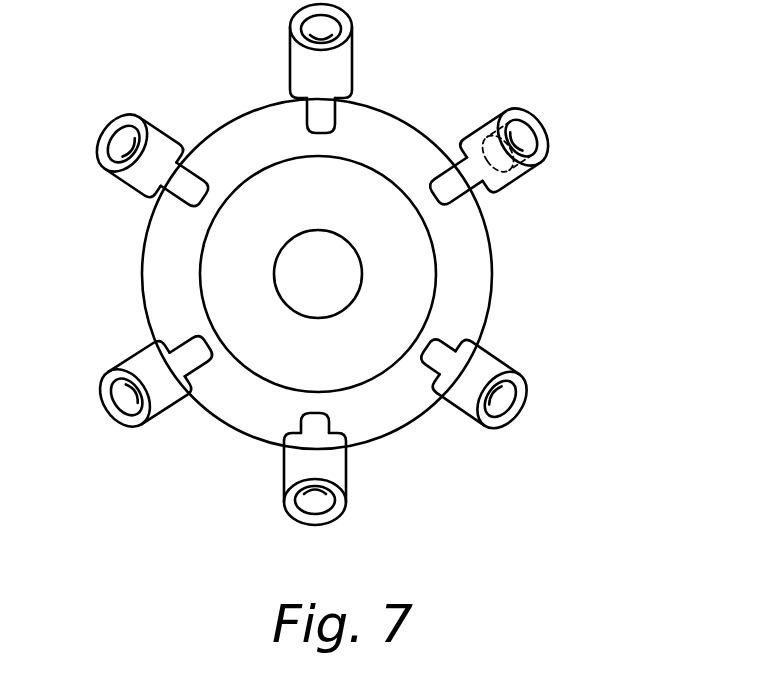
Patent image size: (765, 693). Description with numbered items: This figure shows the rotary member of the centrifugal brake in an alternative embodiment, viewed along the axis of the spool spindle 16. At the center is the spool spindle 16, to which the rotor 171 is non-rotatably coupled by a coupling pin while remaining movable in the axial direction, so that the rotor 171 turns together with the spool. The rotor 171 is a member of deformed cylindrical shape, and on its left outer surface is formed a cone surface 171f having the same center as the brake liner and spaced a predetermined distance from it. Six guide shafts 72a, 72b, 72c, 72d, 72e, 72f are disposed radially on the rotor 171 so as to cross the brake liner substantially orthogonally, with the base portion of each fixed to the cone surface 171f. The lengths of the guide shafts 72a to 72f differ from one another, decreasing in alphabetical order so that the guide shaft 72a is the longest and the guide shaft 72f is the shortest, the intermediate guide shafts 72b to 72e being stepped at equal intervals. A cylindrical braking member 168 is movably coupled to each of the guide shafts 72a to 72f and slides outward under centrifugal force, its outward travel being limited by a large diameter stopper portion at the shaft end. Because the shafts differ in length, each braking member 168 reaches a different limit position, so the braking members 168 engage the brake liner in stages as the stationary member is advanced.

The spool spindle 16 is at (302, 265).
The guide shaft 72a is at (441, 167).
The guide shaft 72b is at (331, 123).
The guide shaft 72c is at (205, 183).
The guide shaft 72d is at (185, 346).
The guide shaft 72e is at (326, 430).
The guide shaft 72f is at (447, 345).
The braking member 168 is at (352, 53).
The rotor 171 is at (511, 262).
The cone surface 171f is at (474, 283).